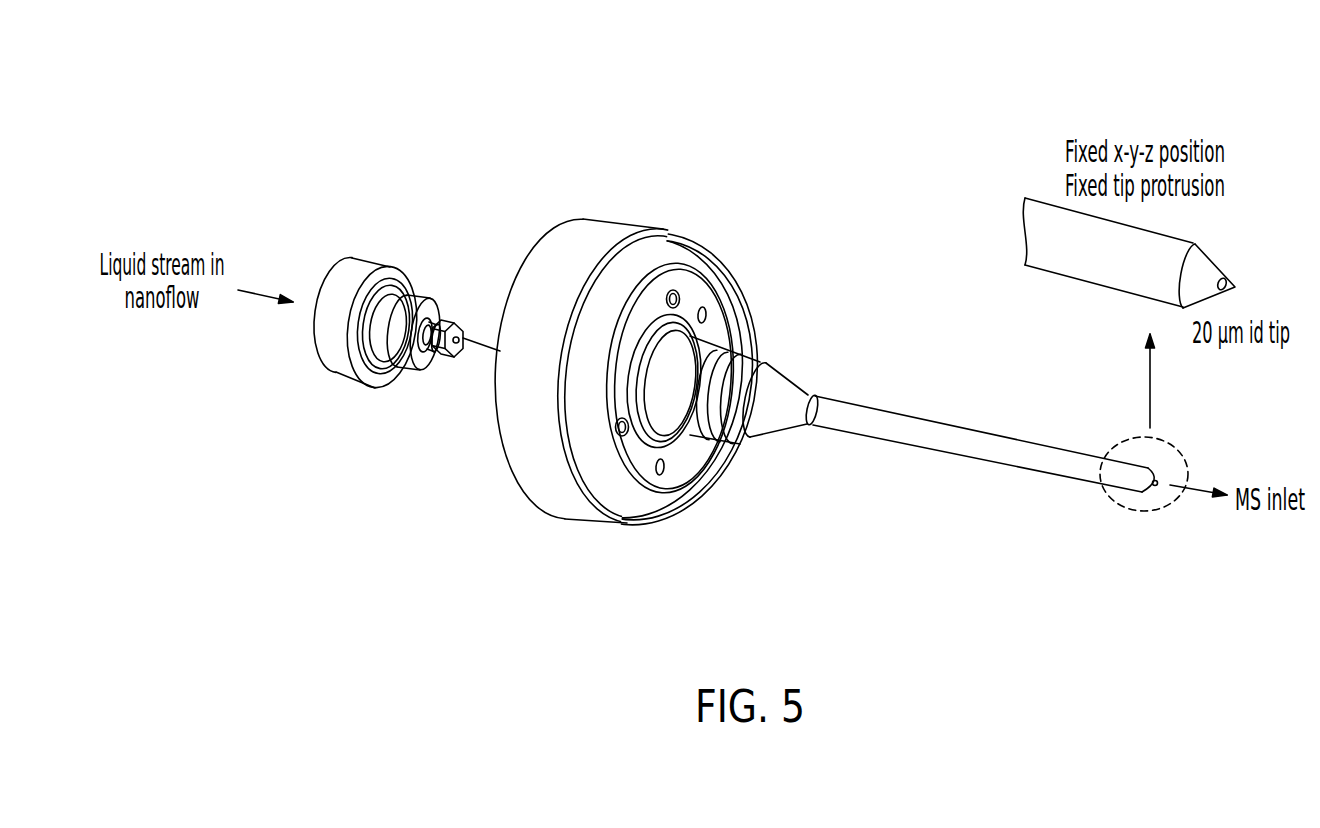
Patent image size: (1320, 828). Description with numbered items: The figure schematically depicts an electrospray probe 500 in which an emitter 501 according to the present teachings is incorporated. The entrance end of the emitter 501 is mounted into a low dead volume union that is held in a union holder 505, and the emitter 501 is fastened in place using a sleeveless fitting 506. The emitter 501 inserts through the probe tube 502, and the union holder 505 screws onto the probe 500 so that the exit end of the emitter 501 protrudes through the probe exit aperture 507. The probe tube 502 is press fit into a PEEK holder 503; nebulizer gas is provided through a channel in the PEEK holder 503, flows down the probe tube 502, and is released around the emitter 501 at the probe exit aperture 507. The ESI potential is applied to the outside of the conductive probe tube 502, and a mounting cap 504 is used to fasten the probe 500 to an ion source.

The electrospray probe 500 is at (395, 103).
The emitter 501 is at (487, 363).
The probe tube 502 is at (998, 483).
The PEEK holder 503 is at (768, 407).
The mounting cap 504 is at (633, 207).
The union holder 505 is at (312, 385).
The sleeveless fitting 506 is at (453, 312).
The probe exit aperture 507 is at (1168, 475).